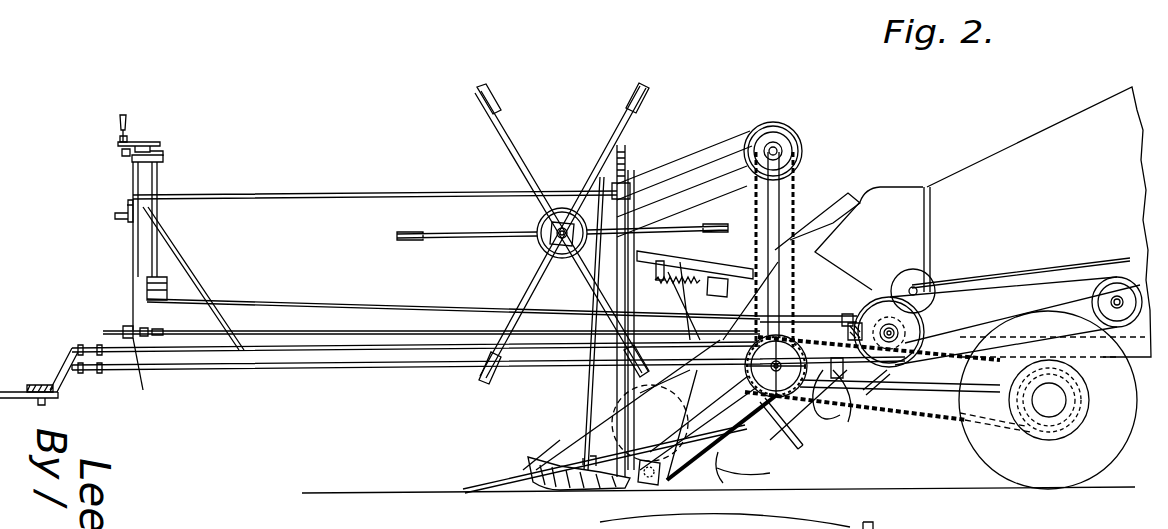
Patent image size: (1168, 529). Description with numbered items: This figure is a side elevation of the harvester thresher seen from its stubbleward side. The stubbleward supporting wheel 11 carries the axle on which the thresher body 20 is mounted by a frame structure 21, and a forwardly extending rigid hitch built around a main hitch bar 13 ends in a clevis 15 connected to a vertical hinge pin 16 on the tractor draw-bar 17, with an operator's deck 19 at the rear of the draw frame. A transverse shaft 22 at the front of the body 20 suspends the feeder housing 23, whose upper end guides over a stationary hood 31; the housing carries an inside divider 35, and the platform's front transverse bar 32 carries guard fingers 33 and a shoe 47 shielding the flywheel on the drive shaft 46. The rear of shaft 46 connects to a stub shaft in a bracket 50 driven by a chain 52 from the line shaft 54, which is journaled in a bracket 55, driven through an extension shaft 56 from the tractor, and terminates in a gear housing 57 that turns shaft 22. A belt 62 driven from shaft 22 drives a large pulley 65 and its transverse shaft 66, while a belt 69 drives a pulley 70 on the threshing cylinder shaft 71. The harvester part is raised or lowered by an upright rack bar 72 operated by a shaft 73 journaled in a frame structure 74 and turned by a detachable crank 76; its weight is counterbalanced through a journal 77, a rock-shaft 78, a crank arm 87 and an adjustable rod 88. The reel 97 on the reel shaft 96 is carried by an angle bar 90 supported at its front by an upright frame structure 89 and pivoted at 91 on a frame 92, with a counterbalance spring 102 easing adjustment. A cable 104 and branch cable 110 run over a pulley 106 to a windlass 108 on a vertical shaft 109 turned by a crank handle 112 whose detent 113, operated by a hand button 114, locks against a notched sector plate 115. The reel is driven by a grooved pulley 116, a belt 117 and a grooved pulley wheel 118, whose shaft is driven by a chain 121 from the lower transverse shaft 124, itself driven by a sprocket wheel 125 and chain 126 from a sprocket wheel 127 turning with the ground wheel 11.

The stubbleward supporting wheel 11 is at (1010, 478).
The main hitch bar 13 is at (226, 370).
The clevis 15 is at (70, 348).
The vertical hinge pin 16 is at (30, 386).
The draw-bar 17 is at (108, 402).
The deck 19 is at (830, 436).
The thresher body 20 is at (1020, 150).
The frame structure 21 is at (905, 383).
The transverse shaft 22 is at (868, 316).
The feeder housing 23 is at (770, 468).
The stationary hood 31 is at (905, 190).
The front transverse bar 32 is at (598, 490).
The guard fingers 33 is at (567, 457).
The inside divider 35 is at (600, 420).
The drive shaft 46 is at (668, 426).
The shoe 47 is at (537, 510).
The bracket 50 is at (832, 412).
The chain 52 is at (902, 414).
The line shaft 54 is at (198, 332).
The bracket 55 is at (141, 390).
The extension shaft 56 is at (118, 330).
The gear housing 57 is at (870, 316).
The belt 62 is at (962, 300).
The large pulley 65 is at (906, 280).
The transverse shaft 66 is at (935, 283).
The belt 69 is at (998, 287).
The pulley 70 is at (1114, 277).
The transverse shaft 71 is at (1077, 282).
The upright rack bar 72 is at (626, 155).
The shaft 73 is at (298, 194).
The frame structure 74 is at (578, 372).
The detachable crank 76 is at (126, 205).
The journal 77 is at (925, 432).
The rock-shaft 78 is at (962, 426).
The crank arm 87 is at (796, 447).
The adjustable rod 88 is at (742, 432).
The upright supporting frame structure 89 is at (588, 299).
The angle bar 90 is at (584, 282).
The pivot 91 is at (641, 256).
The frame 92 is at (695, 262).
The reel shaft 96 is at (540, 226).
The reel 97 is at (510, 140).
The counterbalance spring 102 is at (672, 312).
The cable 104 is at (268, 292).
The pulley 106 is at (688, 480).
The windlass 108 is at (176, 275).
The vertical shaft 109 is at (160, 180).
The branch cable 110 is at (732, 513).
The crank handle 112 is at (141, 142).
The detent 113 is at (96, 153).
The hand button 114 is at (170, 110).
The notched sector plate 115 is at (165, 156).
The grooved pulley 116 is at (510, 259).
The belt 117 is at (700, 150).
The grooved pulley wheel 118 is at (802, 118).
The chain 121 is at (858, 170).
The lower transverse shaft 124 is at (740, 400).
The sprocket wheel 125 is at (753, 383).
The chain 126 is at (968, 447).
The sprocket wheel 127 is at (1025, 428).